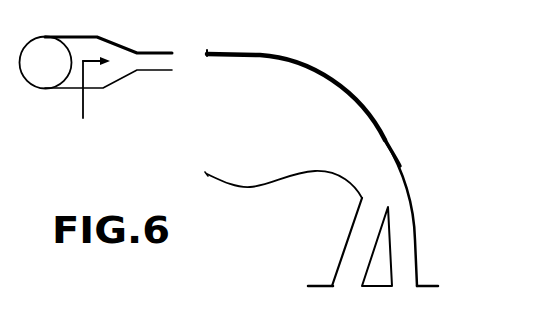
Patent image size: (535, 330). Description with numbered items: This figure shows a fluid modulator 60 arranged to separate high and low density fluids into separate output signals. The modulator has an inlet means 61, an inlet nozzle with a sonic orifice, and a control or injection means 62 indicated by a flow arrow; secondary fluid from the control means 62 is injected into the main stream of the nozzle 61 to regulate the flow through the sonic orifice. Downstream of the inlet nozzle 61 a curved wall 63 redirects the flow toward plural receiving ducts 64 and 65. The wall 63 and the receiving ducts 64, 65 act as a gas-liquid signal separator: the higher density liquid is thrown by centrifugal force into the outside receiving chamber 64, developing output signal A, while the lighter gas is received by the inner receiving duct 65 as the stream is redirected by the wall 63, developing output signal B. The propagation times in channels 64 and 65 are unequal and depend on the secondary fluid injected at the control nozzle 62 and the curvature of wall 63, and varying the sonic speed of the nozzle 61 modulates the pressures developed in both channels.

The fluid modulator 60 is at (155, 124).
The inlet means 61 is at (72, 80).
The control or injection means 62 is at (84, 92).
The wall 63 is at (368, 108).
The receiving duct 64 is at (403, 252).
The receiving duct 65 is at (352, 261).